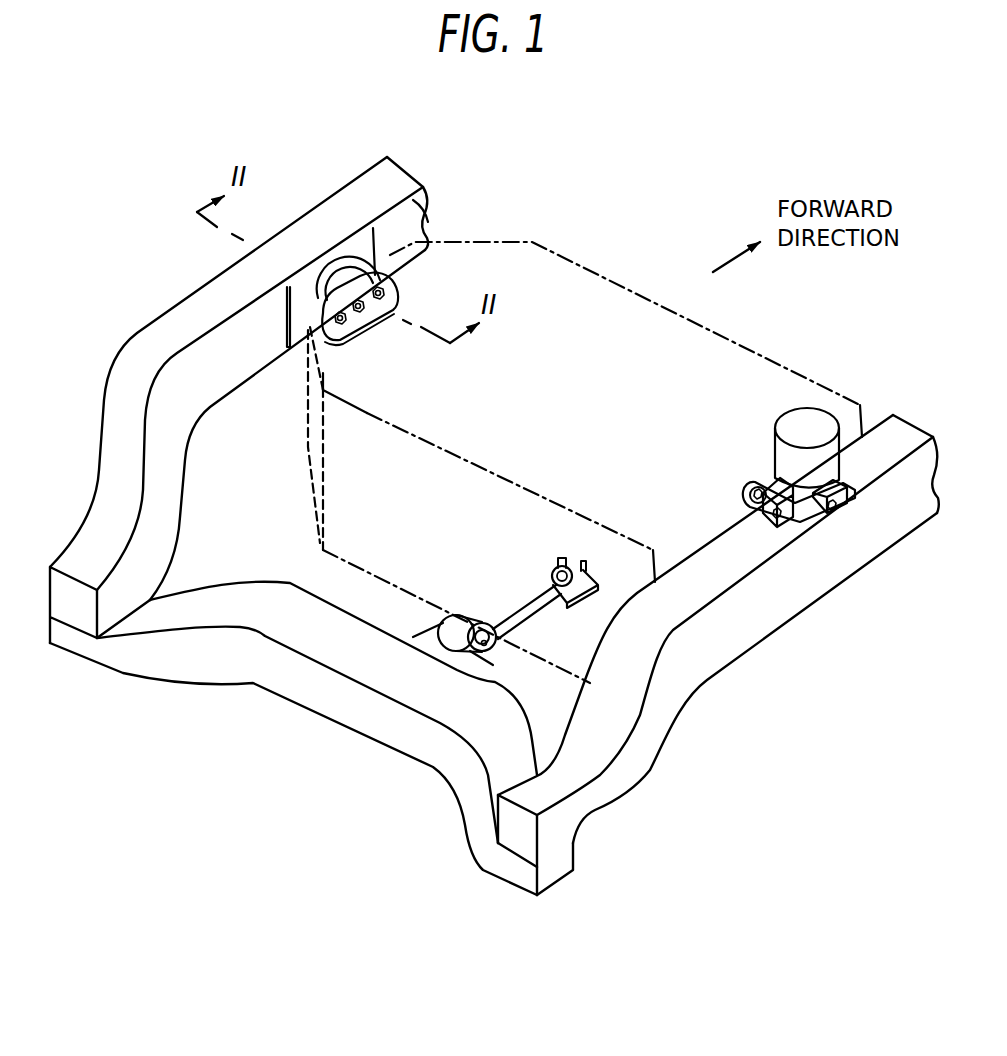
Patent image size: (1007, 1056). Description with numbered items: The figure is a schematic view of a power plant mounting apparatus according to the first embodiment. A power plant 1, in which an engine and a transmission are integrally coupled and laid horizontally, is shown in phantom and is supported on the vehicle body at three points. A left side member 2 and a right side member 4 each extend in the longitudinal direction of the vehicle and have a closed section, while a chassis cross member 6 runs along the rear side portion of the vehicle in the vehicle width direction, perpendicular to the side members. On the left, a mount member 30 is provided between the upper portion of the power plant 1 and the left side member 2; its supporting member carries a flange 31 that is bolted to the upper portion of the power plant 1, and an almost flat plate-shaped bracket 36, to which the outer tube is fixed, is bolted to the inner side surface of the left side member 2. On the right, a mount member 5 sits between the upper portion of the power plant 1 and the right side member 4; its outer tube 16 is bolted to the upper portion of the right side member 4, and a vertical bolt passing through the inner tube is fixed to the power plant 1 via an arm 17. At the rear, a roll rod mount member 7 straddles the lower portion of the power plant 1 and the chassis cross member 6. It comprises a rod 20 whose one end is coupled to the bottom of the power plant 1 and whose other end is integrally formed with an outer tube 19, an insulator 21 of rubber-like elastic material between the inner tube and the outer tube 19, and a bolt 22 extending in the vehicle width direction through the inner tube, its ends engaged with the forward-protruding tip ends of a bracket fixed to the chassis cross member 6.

The power plant 1 is at (627, 292).
The left side member 2 is at (190, 292).
The right side member 4 is at (837, 587).
The mount member 5 is at (762, 422).
The chassis cross member 6 is at (347, 728).
The roll rod mount member 7 is at (505, 604).
The outer tube 16 is at (772, 443).
The arm 17 is at (760, 473).
The outer tube 19 is at (470, 616).
The rod 20 is at (527, 617).
The insulator 21 is at (500, 620).
The bolt 22 is at (483, 645).
The mount member 30 is at (377, 259).
The flange 31 is at (363, 330).
The bracket 36 is at (422, 208).